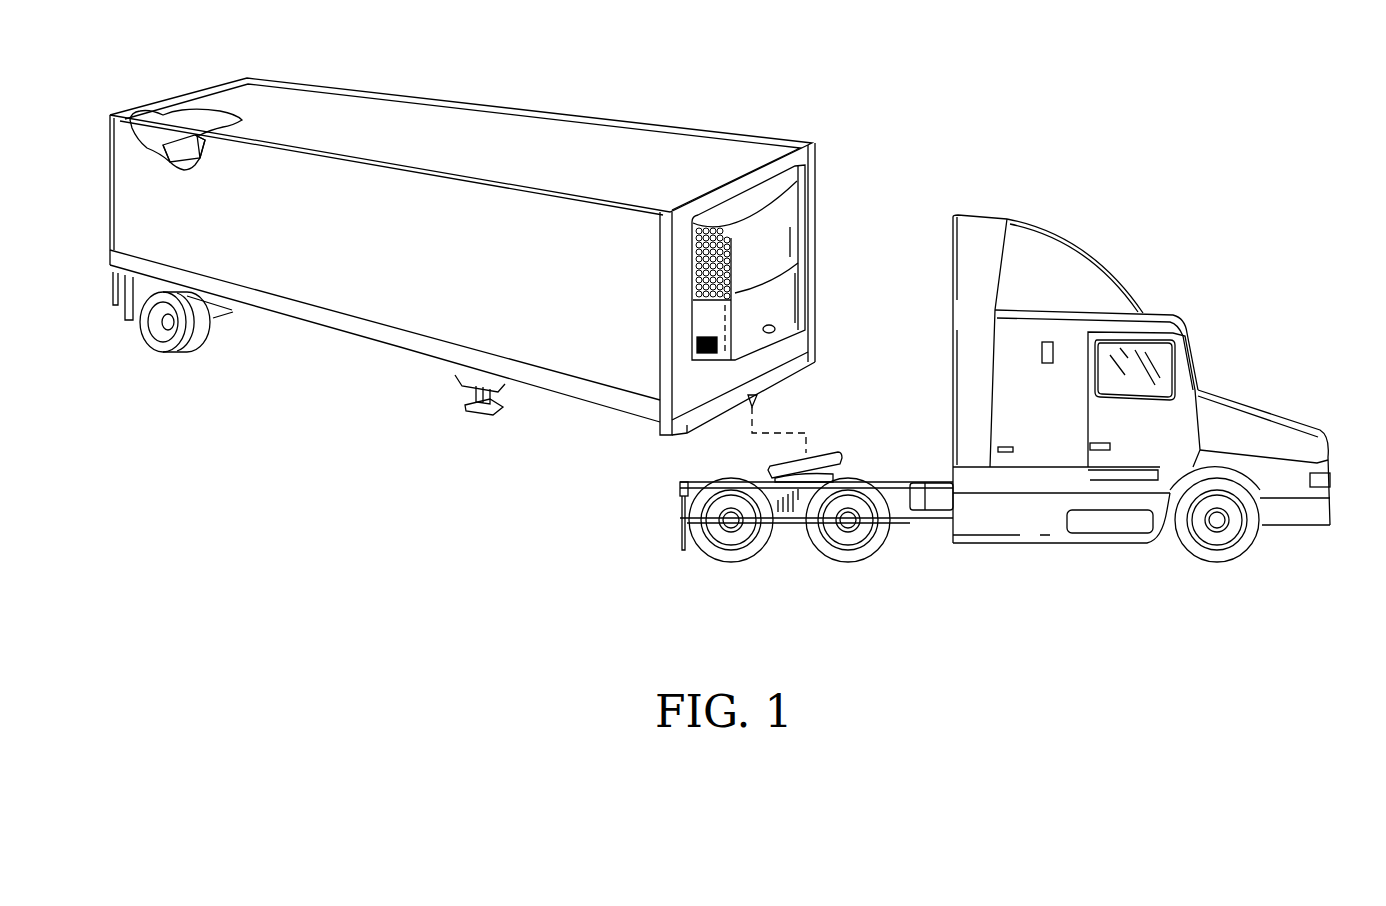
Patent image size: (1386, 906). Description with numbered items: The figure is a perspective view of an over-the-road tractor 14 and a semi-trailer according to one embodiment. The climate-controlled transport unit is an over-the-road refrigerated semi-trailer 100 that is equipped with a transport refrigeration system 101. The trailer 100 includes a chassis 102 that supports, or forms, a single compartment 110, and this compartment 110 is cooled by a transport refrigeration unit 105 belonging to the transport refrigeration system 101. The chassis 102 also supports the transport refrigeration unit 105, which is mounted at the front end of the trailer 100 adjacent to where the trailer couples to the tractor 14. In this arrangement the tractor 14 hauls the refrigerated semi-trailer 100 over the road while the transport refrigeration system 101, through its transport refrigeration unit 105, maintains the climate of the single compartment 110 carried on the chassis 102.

The transport refrigeration system 101 is at (772, 82).
The refrigerated semi-trailer 100 is at (537, 132).
The single compartment 110 is at (143, 130).
The transport refrigeration unit 105 is at (778, 243).
The chassis 102 is at (362, 338).
The tractor 14 is at (1087, 270).